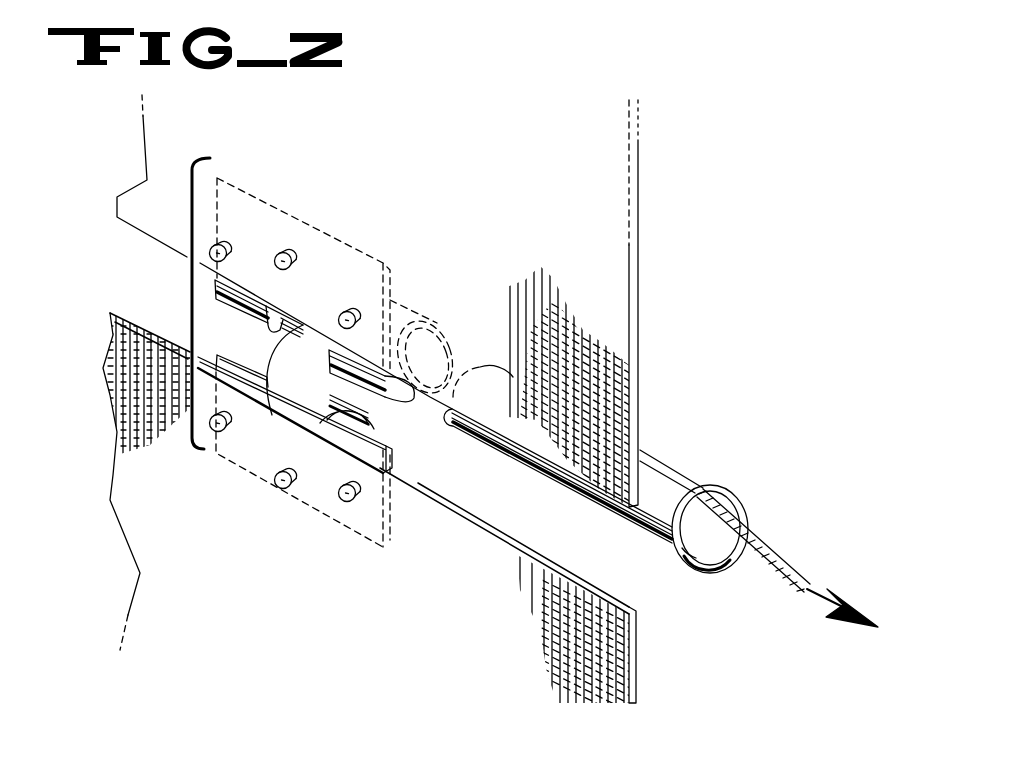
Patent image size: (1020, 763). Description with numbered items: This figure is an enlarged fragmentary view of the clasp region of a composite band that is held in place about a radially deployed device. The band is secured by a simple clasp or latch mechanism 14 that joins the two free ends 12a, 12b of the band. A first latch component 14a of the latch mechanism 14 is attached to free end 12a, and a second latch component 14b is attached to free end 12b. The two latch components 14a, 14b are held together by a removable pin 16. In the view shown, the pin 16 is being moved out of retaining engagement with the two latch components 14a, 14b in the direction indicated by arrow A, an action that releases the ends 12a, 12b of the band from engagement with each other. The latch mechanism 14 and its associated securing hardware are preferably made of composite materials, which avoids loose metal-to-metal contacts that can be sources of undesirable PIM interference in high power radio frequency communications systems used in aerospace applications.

The free end 12a is at (640, 430).
The free end 12b is at (637, 663).
The latch mechanism 14 is at (188, 288).
The first latch component 14a is at (397, 407).
The second latch component 14b is at (392, 453).
The removable pin 16 is at (747, 503).
The arrow A is at (853, 600).